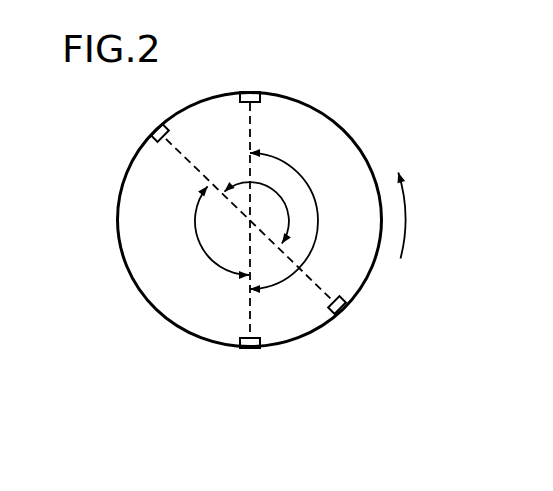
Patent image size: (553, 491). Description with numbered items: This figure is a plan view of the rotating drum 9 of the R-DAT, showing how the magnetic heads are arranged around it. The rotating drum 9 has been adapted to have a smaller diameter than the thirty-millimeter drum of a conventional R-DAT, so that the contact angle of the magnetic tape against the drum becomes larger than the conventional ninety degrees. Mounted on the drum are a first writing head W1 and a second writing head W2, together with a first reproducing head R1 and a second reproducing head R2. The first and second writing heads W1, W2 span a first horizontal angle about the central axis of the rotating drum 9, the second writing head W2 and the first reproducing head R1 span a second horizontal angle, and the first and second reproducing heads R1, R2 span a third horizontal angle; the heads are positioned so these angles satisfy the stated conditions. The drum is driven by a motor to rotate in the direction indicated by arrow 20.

The rotating drum 9 is at (298, 124).
The first writing head W1 is at (250, 92).
The second writing head W2 is at (248, 348).
The first reproducing head R1 is at (154, 134).
The second reproducing head R2 is at (343, 311).
The arrow indicating rotation direction 20 is at (407, 220).